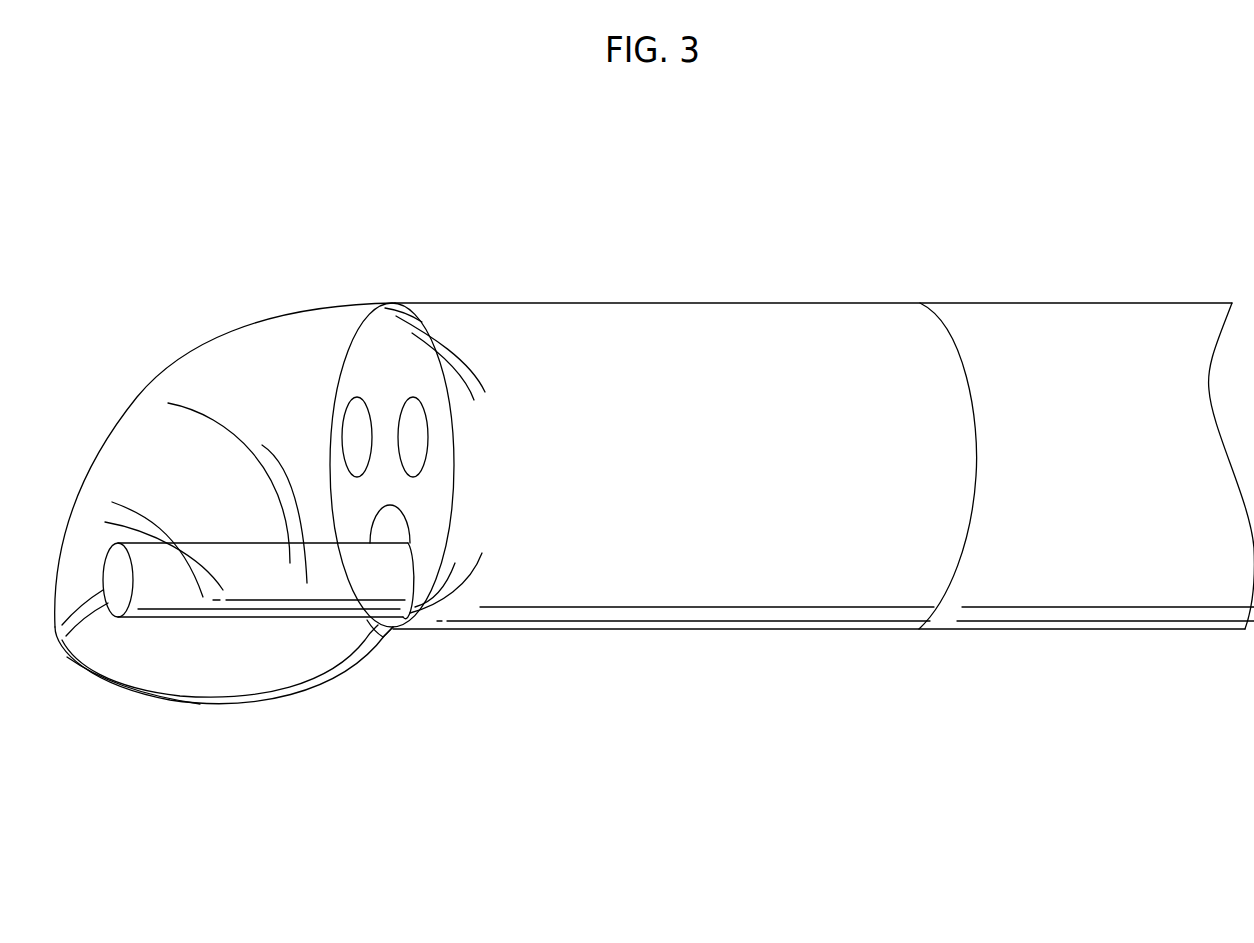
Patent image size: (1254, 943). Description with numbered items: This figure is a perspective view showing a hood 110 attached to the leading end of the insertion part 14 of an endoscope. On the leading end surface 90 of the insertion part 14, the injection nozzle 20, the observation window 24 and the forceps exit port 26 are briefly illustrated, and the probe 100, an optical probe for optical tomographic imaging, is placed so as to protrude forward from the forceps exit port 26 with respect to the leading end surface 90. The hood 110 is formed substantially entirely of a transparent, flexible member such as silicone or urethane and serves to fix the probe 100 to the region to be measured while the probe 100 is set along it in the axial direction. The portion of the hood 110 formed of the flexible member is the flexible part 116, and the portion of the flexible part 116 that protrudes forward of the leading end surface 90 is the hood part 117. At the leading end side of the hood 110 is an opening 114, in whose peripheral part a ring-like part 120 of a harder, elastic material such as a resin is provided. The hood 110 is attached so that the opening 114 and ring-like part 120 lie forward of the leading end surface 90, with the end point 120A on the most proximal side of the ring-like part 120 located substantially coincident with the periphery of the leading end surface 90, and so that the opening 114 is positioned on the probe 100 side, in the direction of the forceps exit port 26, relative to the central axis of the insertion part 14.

The insertion part 14 is at (988, 294).
The flexible part 116 is at (702, 292).
The hood 110 is at (137, 397).
The hood part 117 is at (192, 358).
The leading end surface 90 is at (360, 367).
The injection nozzle 20 is at (352, 432).
The observation window 24 is at (415, 448).
The forceps exit port 26 is at (403, 528).
The probe 100 is at (241, 547).
The ring-like part 120 is at (342, 687).
The end point 120A is at (383, 637).
The opening 114 is at (172, 670).